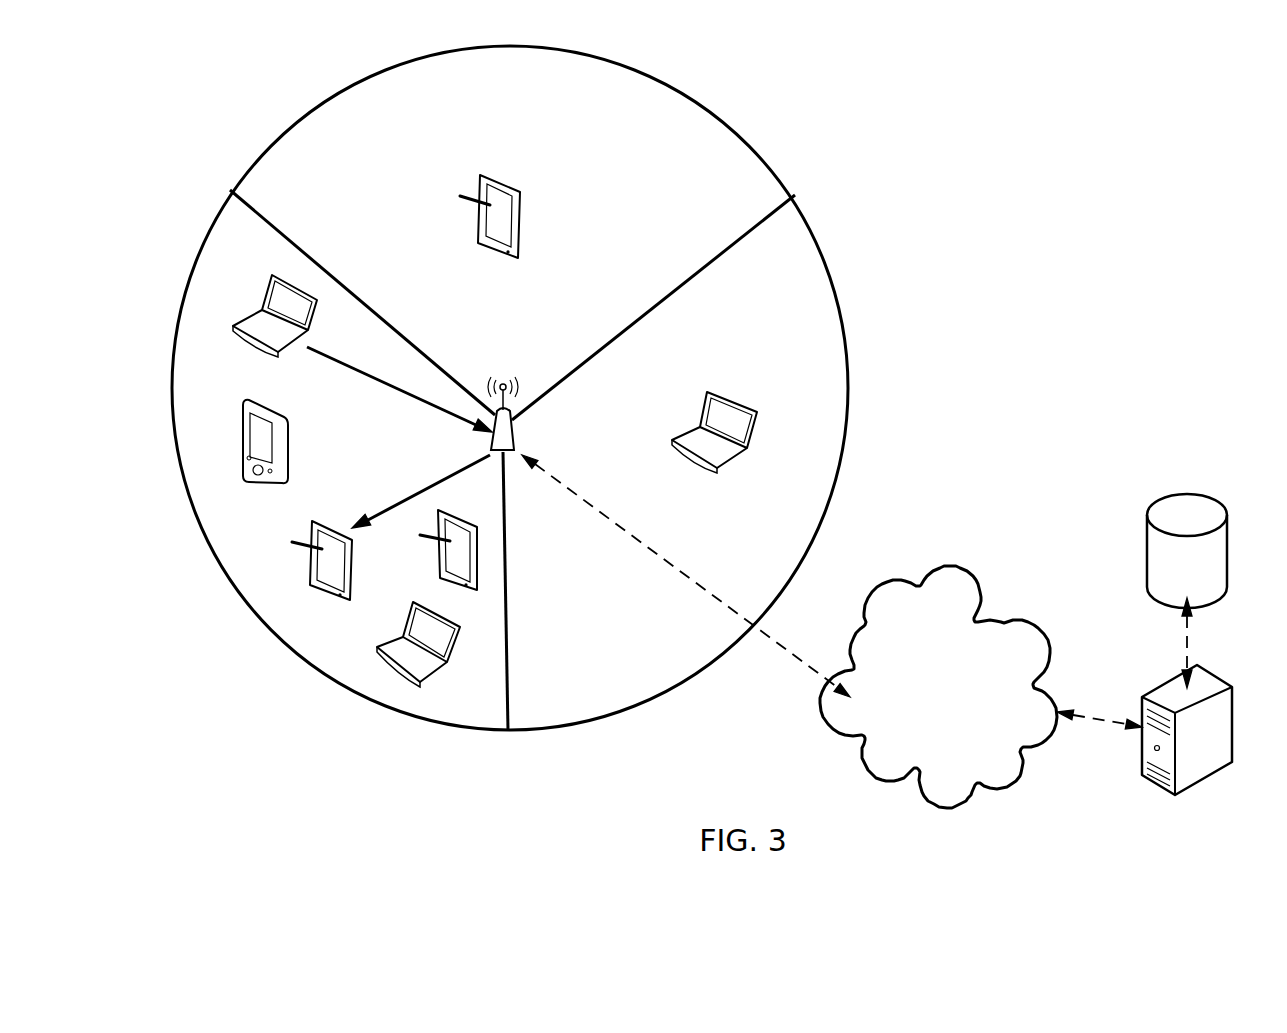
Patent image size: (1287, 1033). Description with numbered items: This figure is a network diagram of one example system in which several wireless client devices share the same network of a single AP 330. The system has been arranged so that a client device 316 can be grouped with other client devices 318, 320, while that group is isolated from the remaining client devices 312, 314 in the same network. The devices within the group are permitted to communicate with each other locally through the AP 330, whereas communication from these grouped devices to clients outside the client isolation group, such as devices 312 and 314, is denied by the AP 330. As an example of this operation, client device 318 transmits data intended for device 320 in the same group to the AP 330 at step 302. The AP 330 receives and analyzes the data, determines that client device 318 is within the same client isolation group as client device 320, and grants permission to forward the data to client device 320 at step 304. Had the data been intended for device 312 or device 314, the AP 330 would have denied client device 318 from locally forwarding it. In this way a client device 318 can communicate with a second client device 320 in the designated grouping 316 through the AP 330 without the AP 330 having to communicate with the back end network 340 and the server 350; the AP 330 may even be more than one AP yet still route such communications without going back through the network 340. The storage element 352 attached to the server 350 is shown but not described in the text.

The step 302 is at (338, 361).
The step 304 is at (405, 500).
The client device 312 is at (481, 197).
The client device 314 is at (703, 391).
The client device 316 is at (434, 654).
The client device 318 is at (263, 303).
The client device 320 is at (333, 521).
The AP 330 is at (497, 383).
The back end network 340 is at (938, 687).
The server 350 is at (1232, 762).
The database 352 is at (1187, 551).